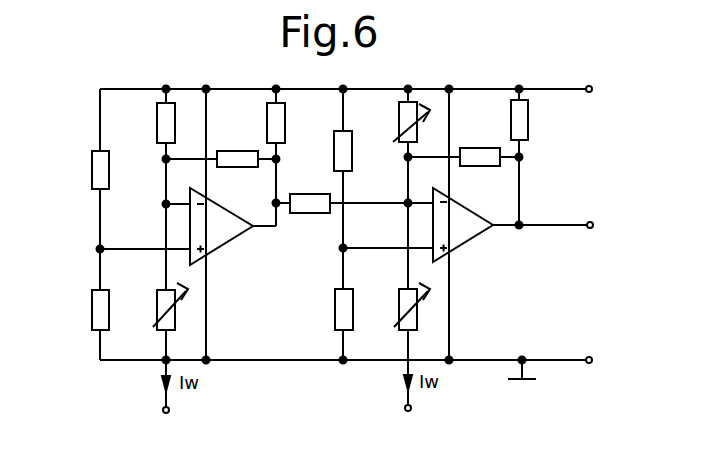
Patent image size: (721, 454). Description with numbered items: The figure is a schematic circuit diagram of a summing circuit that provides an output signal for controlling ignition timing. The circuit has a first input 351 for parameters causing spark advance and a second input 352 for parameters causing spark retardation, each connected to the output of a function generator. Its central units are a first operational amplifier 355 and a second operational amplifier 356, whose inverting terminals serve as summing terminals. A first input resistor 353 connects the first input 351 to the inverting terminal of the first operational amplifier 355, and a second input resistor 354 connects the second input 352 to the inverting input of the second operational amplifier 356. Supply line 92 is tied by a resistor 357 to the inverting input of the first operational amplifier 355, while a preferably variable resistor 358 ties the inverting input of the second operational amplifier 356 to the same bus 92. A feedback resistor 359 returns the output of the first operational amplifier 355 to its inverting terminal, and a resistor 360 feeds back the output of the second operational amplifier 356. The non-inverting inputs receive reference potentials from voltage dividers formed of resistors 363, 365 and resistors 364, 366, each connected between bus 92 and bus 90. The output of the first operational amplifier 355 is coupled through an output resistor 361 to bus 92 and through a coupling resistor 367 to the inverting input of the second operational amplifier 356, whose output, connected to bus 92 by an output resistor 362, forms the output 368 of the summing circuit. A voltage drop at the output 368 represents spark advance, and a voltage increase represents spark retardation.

The bus 90 is at (541, 360).
The supply line 92 is at (476, 89).
The first input 351 is at (163, 410).
The second input 352 is at (405, 408).
The first input resistor 353 is at (157, 303).
The second input resistor 354 is at (399, 297).
The first operational amplifier 355 is at (234, 241).
The second operational amplifier 356 is at (468, 235).
The resistor 357 is at (157, 125).
The resistor 358 is at (399, 120).
The feedback resistor 359 is at (237, 151).
The resistor 360 is at (480, 148).
The output resistor 361 is at (285, 118).
The output resistor 362 is at (528, 118).
The resistor 363 is at (92, 172).
The resistor 364 is at (352, 160).
The resistor 365 is at (92, 310).
The resistor 366 is at (335, 307).
The coupling resistor 367 is at (310, 213).
The output 368 is at (597, 225).